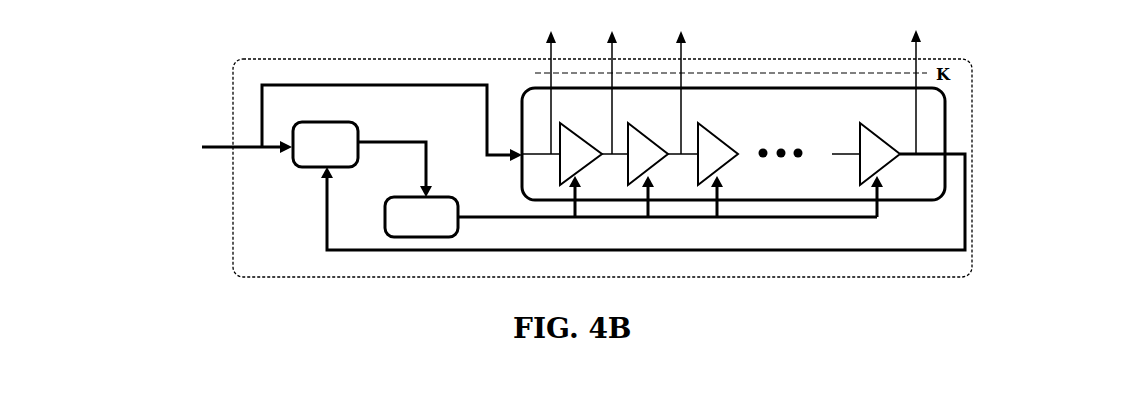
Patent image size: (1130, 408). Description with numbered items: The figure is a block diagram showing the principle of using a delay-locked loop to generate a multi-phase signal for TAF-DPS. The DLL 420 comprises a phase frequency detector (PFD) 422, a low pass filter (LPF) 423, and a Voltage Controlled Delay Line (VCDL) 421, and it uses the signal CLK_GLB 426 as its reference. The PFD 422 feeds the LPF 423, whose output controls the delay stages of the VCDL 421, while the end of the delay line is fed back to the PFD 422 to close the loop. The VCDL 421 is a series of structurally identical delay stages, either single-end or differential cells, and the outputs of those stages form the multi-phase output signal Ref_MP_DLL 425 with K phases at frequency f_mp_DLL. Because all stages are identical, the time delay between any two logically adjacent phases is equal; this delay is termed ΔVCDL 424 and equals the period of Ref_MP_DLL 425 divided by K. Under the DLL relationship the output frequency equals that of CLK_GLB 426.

The DLL 420 is at (408, 34).
The Voltage Controlled Delay Line (VCDL) 421 is at (900, 212).
The phase frequency detector (PFD) 422 is at (362, 121).
The low pass filter (LPF) 423 is at (380, 211).
The time delay ΔVCDL 424 is at (797, 22).
The multi-phase signal Ref_MP_DLL 425 is at (954, 25).
The signal CLK_GLB 426 is at (158, 106).